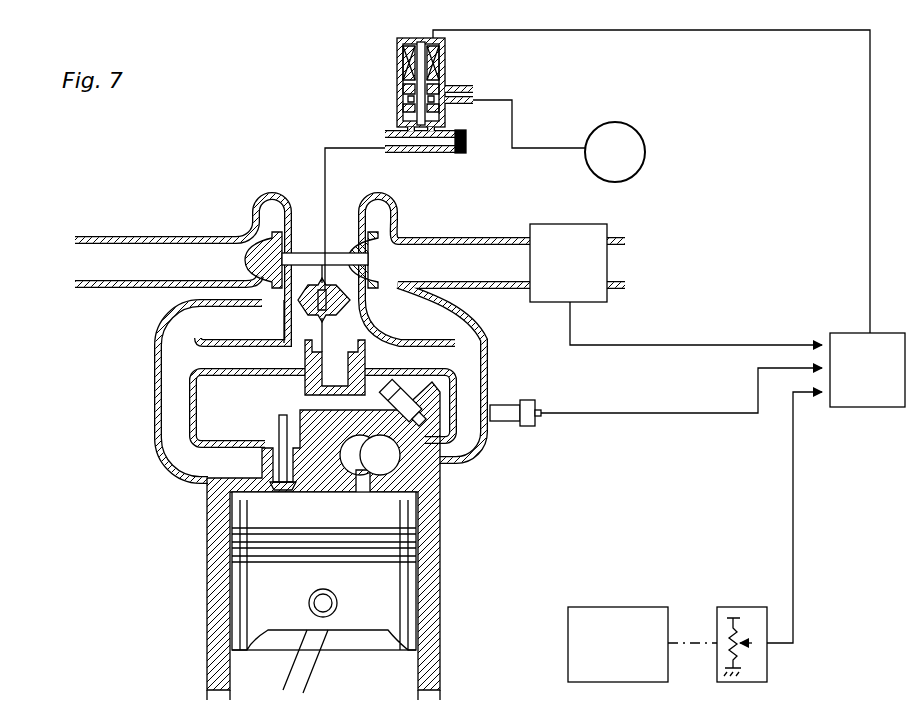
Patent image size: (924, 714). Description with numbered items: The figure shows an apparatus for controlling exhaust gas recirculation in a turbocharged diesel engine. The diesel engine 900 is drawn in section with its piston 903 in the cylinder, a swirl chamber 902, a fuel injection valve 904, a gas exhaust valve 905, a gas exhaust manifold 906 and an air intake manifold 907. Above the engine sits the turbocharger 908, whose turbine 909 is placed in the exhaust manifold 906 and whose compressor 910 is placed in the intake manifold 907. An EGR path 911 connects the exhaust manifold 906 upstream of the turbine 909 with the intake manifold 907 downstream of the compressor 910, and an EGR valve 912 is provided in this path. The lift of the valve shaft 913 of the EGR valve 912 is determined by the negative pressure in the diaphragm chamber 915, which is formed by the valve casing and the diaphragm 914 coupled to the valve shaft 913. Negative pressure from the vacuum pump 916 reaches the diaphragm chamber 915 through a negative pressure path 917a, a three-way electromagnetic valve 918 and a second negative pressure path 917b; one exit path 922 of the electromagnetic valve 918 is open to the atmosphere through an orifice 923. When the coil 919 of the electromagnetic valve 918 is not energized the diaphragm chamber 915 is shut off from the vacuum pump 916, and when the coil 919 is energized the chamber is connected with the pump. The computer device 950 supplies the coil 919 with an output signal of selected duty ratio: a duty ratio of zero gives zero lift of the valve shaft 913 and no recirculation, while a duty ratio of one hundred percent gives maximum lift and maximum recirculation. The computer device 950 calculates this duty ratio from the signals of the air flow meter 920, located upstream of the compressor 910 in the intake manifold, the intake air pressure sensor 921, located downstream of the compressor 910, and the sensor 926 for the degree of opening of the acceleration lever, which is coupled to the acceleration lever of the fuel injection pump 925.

The diesel engine 900 is at (442, 534).
The swirl chamber 902 is at (436, 470).
The piston 903 is at (400, 588).
The fuel injection valve 904 is at (432, 408).
The gas exhaust valve 905 is at (276, 489).
The gas exhaust manifold 906 is at (210, 482).
The air intake manifold 907 is at (468, 464).
The turbocharger 908 is at (343, 246).
The turbine 909 is at (256, 236).
The compressor 910 is at (405, 240).
The EGR path 911 is at (192, 395).
The EGR valve 912 is at (334, 336).
The valve shaft 913 is at (308, 373).
The diaphragm 914 is at (285, 326).
The diaphragm chamber 915 is at (306, 253).
The vacuum pump 916 is at (640, 152).
The negative pressure path 917a is at (552, 148).
The negative pressure path 917b is at (346, 148).
The three-way electromagnetic valve 918 is at (448, 60).
The coil 919 is at (396, 60).
The air flow meter 920 is at (676, 284).
The intake air pressure sensor 921 is at (518, 422).
The exit path 922 is at (432, 147).
The orifice 923 is at (468, 148).
The fuel injection pump 925 is at (630, 608).
The sensor for the degree of opening of the acceleration lever 926 is at (744, 608).
The computer device 950 is at (867, 370).